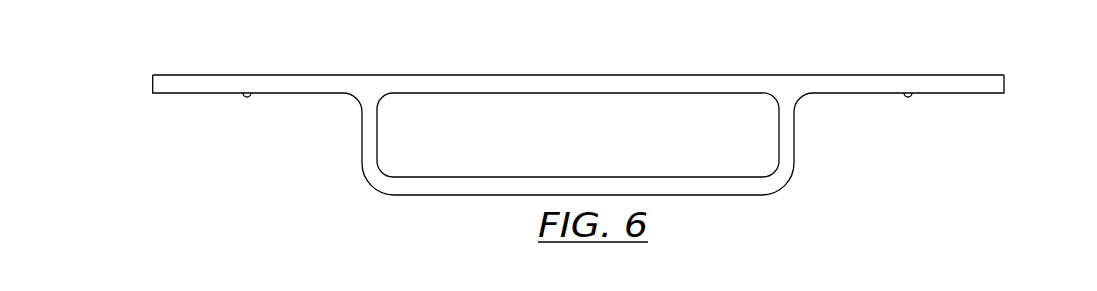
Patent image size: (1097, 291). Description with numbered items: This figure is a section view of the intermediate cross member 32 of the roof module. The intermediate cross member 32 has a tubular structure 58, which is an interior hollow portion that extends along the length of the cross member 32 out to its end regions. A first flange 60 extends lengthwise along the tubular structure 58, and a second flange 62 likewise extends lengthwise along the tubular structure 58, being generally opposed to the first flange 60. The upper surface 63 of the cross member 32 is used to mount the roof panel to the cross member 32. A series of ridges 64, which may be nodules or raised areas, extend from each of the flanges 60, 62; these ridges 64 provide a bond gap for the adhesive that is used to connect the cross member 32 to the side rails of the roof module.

The intermediate cross member 32 is at (985, 57).
The tubular structure 58 is at (732, 196).
The first flange 60 is at (873, 83).
The second flange 62 is at (260, 75).
The upper surface 63 is at (733, 76).
The ridges 64 is at (244, 97).